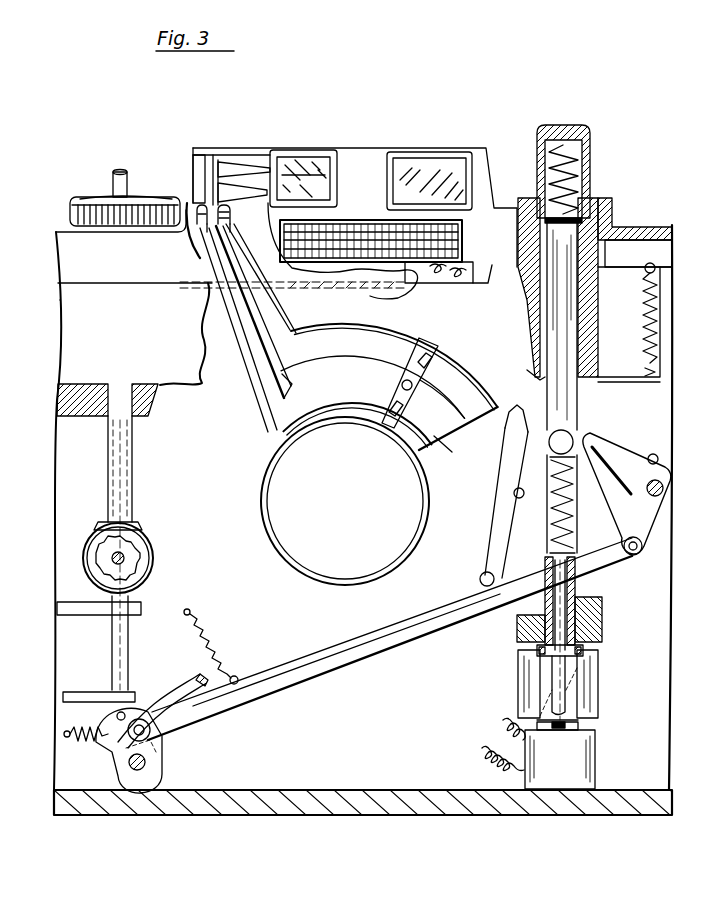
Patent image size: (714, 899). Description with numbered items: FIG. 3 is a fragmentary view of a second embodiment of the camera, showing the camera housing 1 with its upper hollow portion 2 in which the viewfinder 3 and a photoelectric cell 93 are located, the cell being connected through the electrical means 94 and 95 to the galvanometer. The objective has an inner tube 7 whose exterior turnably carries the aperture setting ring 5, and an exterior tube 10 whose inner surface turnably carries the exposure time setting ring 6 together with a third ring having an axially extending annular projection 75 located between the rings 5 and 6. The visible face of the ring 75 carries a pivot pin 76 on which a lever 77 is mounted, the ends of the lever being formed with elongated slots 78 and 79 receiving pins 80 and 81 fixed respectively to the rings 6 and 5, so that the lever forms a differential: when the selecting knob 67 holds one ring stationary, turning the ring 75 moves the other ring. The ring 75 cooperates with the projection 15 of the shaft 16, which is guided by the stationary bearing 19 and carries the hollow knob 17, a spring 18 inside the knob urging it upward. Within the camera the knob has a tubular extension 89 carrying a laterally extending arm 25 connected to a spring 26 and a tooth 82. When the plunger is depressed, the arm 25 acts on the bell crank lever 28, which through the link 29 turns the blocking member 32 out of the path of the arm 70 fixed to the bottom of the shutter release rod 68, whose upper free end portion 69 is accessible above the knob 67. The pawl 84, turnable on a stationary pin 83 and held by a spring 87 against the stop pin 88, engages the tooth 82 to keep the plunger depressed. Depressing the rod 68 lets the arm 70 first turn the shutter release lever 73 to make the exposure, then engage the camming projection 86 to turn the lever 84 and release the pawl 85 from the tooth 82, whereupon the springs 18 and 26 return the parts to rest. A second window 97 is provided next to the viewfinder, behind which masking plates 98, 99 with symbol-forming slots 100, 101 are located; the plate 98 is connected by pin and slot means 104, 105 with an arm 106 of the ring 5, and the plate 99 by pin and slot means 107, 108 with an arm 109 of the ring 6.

The camera housing 1 is at (372, 812).
The upper hollow portion 2 is at (494, 205).
The viewfinder 3 is at (405, 158).
The aperture setting ring 5 is at (284, 434).
The exposure time setting ring 6 is at (480, 420).
The inner tube 7 is at (424, 514).
The exterior tube 10 is at (312, 326).
The projection 15 is at (574, 440).
The shaft 16 is at (563, 417).
The hollow knob 17 is at (591, 142).
The spring 18 is at (558, 150).
The stationary bearing 19 is at (602, 618).
The laterally extending arm 25 is at (630, 376).
The spring 26 is at (646, 300).
The bell crank lever 28 is at (620, 478).
The link 29 is at (512, 597).
The blocking member 32 is at (163, 755).
The selecting knob 67 is at (80, 198).
The shutter release rod 68 is at (118, 639).
The upper free end portion 69 is at (128, 178).
The arm 70 is at (78, 698).
The shutter release lever 73 is at (188, 690).
The annular projection 75 is at (290, 378).
The pivot pin 76 is at (400, 385).
The lever 77 is at (428, 374).
The elongated slot 78 is at (427, 352).
The elongated slot 79 is at (436, 452).
The pin 80 is at (430, 356).
The pin 81 is at (390, 418).
The tooth 82 is at (528, 374).
The stationary pin 83 is at (480, 577).
The pawl 84 is at (440, 600).
The pawl 85 is at (494, 462).
The camming projection 86 is at (100, 744).
The spring 87 is at (206, 635).
The stop pin 88 is at (519, 498).
The tubular extension 89 is at (538, 312).
The photoelectric cell 93 is at (358, 222).
The electrical means 94 is at (395, 280).
The electrical means 95 is at (466, 270).
The second window 97 is at (308, 155).
The masking plate 98 is at (197, 158).
The masking plate 99 is at (268, 170).
The slot 100 is at (236, 163).
The slot 101 is at (250, 188).
The pin and slot means 104 is at (199, 210).
The pin and slot means 105 is at (214, 228).
The arm 106 is at (250, 336).
The pin and slot means 107 is at (215, 160).
The pin and slot means 108 is at (226, 232).
The arm 109 is at (225, 304).